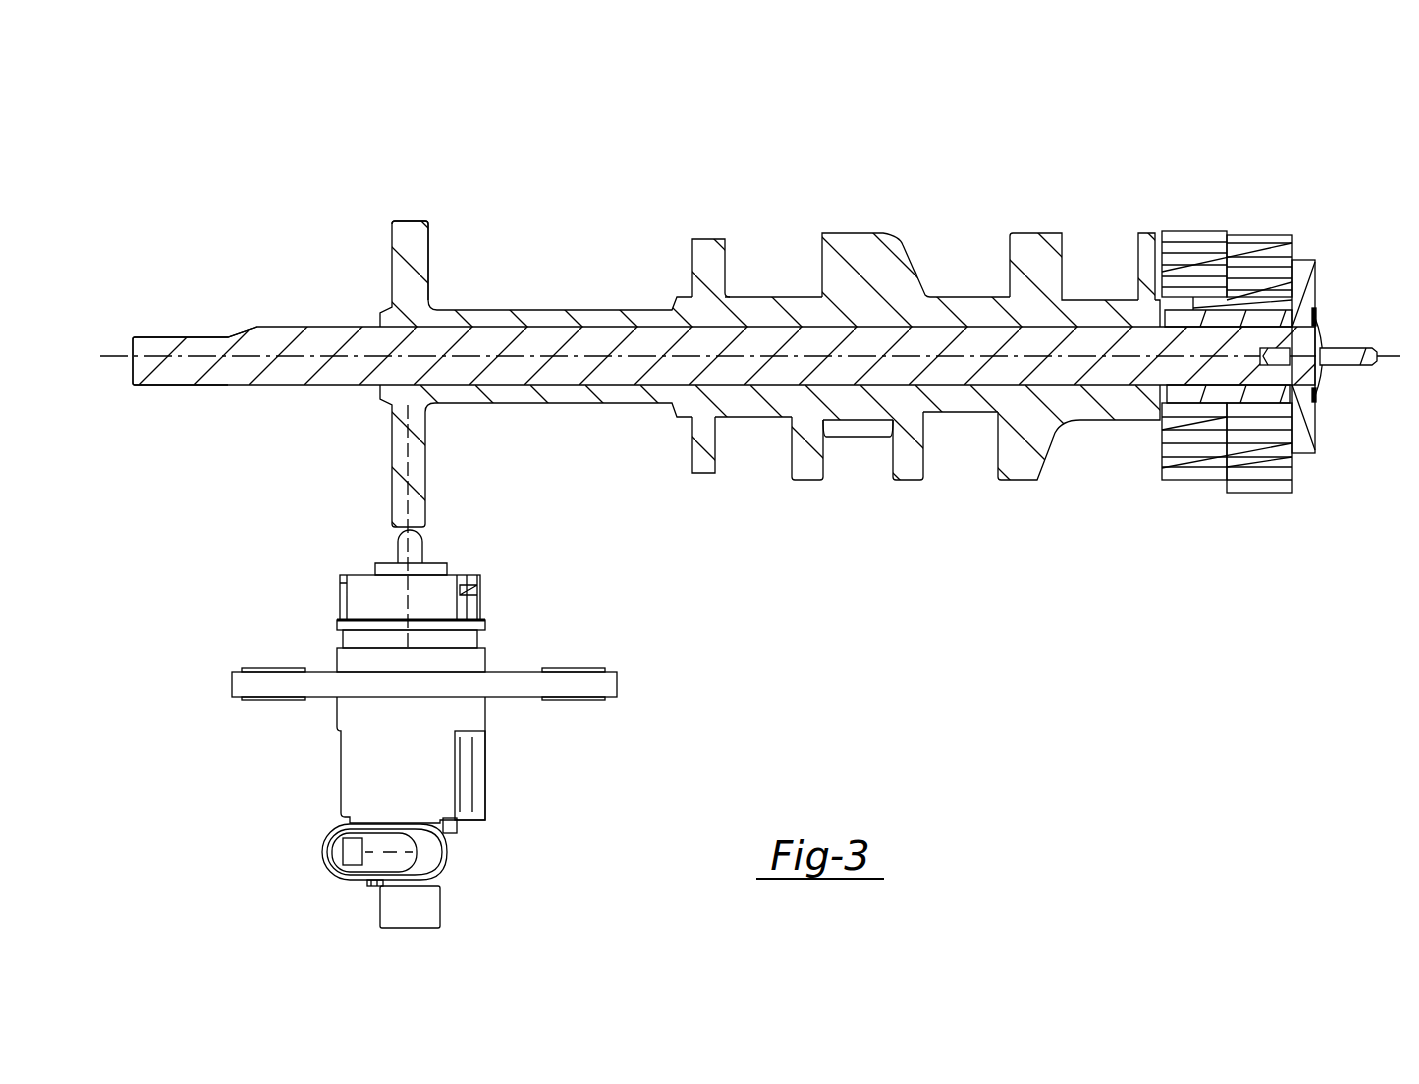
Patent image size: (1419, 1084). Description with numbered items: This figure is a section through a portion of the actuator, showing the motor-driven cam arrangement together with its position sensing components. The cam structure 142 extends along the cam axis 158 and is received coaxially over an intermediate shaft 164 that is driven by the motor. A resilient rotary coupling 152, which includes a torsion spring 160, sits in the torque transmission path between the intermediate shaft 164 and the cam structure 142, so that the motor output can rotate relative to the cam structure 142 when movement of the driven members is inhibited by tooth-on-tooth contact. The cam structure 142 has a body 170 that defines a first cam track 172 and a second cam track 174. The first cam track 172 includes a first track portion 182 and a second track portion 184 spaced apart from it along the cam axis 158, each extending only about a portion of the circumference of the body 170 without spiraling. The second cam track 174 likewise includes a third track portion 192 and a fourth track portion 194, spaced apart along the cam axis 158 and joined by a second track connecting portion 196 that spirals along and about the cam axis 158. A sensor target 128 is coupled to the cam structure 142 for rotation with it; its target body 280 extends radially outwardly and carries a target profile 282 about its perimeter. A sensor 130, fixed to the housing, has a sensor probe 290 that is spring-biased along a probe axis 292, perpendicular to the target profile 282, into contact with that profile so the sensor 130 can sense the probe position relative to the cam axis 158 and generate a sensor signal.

The sensor target 128 is at (415, 238).
The sensor 130 is at (382, 767).
The cam structure 142 is at (853, 210).
The resilient rotary coupling 152 is at (1322, 290).
The cam axis 158 is at (108, 353).
The torsion spring 160 is at (1225, 448).
The intermediate shaft 164 is at (258, 368).
The body 170 is at (700, 308).
The first cam track 172 is at (1086, 250).
The second cam track 174 is at (732, 470).
The first track portion 182 is at (1120, 262).
The second track portion 184 is at (967, 432).
The third track portion 192 is at (861, 437).
The fourth track portion 194 is at (752, 428).
The second track connecting portion 196 is at (738, 258).
The target body 280 is at (400, 285).
The target profile 282 is at (410, 220).
The sensor probe 290 is at (404, 546).
The probe axis 292 is at (405, 597).